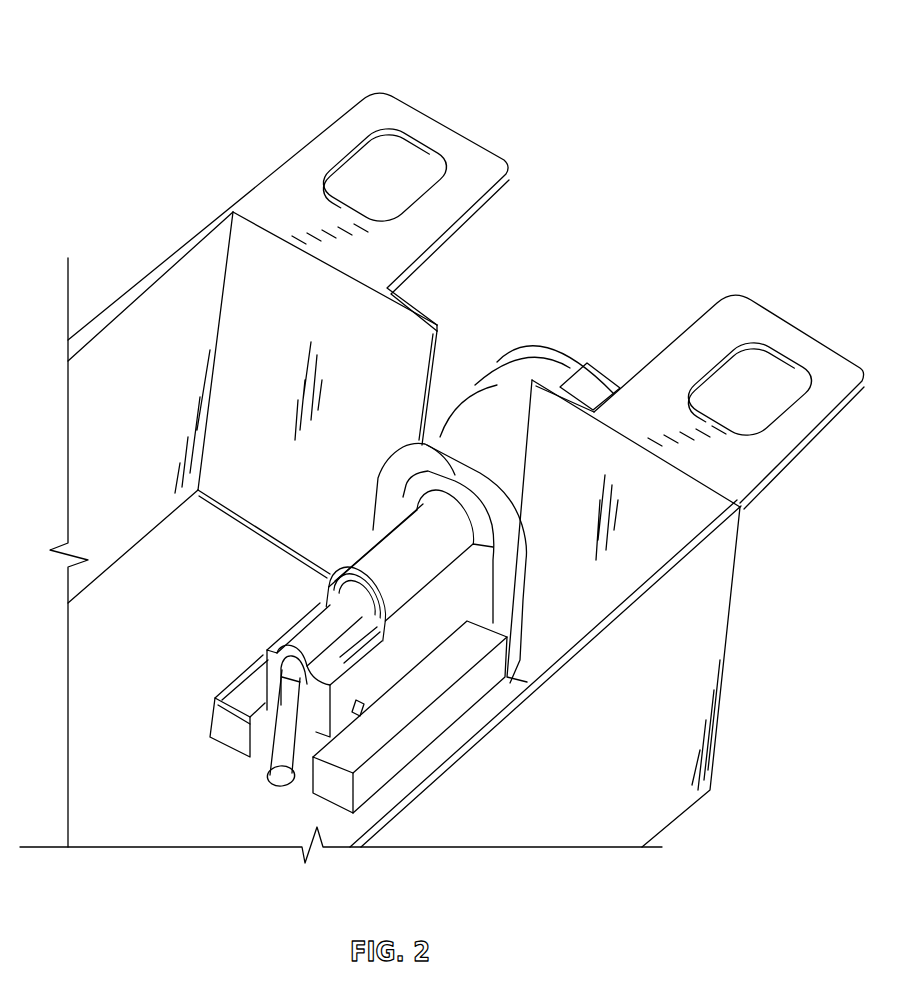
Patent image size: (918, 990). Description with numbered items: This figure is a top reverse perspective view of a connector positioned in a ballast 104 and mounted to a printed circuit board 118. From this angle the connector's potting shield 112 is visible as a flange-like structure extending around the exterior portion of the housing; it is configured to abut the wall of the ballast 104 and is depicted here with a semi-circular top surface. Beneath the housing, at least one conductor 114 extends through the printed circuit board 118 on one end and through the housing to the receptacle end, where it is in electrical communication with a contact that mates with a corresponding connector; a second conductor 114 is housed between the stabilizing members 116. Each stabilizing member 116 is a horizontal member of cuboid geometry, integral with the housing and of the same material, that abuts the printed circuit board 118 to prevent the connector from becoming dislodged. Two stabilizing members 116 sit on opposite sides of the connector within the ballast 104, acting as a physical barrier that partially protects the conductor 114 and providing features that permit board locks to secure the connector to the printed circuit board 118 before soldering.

The ballast 104 is at (164, 262).
The potting shield 112 is at (437, 441).
The conductor 114 is at (277, 758).
The stabilizing member 116 is at (417, 690).
The printed circuit board 118 is at (347, 830).